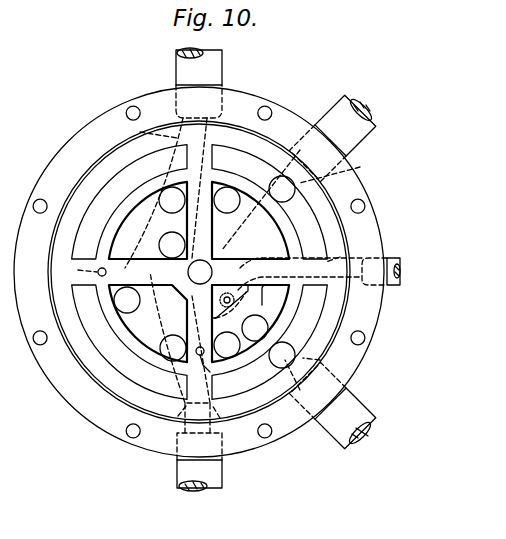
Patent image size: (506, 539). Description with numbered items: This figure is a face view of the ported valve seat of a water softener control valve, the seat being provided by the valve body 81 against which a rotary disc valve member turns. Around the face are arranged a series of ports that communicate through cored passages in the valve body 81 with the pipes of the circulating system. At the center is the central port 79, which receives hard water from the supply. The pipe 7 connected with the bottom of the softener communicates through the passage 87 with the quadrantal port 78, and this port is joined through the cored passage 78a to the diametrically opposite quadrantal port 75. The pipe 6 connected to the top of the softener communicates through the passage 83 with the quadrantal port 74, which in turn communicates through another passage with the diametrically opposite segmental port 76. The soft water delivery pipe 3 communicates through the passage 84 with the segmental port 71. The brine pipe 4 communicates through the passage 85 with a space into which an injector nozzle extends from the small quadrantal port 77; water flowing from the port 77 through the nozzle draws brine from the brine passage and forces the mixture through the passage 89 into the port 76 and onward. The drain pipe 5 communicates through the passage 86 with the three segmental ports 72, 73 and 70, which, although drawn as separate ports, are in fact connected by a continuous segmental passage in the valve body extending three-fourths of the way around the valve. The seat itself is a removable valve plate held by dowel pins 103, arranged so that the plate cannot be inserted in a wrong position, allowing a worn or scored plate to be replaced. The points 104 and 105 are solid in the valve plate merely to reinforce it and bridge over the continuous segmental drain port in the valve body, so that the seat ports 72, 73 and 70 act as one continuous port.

The soft water delivery pipe 3 is at (332, 112).
The brine pipe 4 is at (395, 257).
The drain pipe 5 is at (355, 398).
The pipe 6 is at (218, 70).
The pipe 7 is at (180, 477).
The segmental port 70 is at (113, 183).
The segmental port 71 is at (227, 150).
The segmental port 72 is at (316, 303).
The segmental port 73 is at (95, 348).
The quadrantal port 74 is at (137, 220).
The quadrantal port 75 is at (232, 257).
The segmental port 76 is at (276, 308).
The small quadrantal port 77 is at (235, 259).
The quadrantal port 78 is at (148, 338).
The cored passage 78a is at (160, 247).
The central port 79 is at (205, 264).
The valve body 81 is at (78, 415).
The passage 83 is at (138, 131).
The passage 84 is at (360, 167).
The passage 85 is at (340, 257).
The passage 86 is at (320, 360).
The passage 87 is at (178, 416).
The passage 89 is at (248, 308).
The dowel pins 103 is at (98, 274).
The solid point 104 is at (220, 418).
The solid point 105 is at (78, 270).